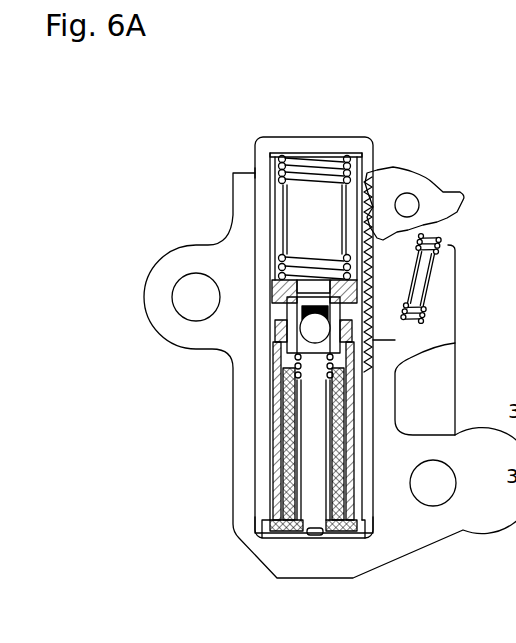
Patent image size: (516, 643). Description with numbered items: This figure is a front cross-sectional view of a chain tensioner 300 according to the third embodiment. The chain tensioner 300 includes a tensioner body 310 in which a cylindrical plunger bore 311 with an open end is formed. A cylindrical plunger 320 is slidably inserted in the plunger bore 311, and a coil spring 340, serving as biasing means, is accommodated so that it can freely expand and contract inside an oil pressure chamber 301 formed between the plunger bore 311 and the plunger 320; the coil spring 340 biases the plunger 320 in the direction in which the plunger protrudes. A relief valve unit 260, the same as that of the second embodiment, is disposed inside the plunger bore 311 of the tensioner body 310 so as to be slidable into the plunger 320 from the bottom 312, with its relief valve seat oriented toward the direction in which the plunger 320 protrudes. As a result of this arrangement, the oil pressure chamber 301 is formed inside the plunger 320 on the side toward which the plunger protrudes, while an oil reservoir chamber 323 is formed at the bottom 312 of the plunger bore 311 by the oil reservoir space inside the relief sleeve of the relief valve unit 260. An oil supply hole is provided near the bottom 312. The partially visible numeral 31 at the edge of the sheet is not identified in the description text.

The chain tensioner 300 is at (126, 135).
The tensioner body 310 is at (232, 246).
The plunger bore 311 is at (254, 173).
The bottom 312 is at (311, 526).
The plunger 320 is at (297, 142).
The oil reservoir chamber 323 is at (313, 435).
The coil spring 340 is at (318, 209).
The oil pressure chamber 301 is at (352, 203).
The relief valve unit 260 is at (271, 354).
The pawl lever 31 is at (385, 337).